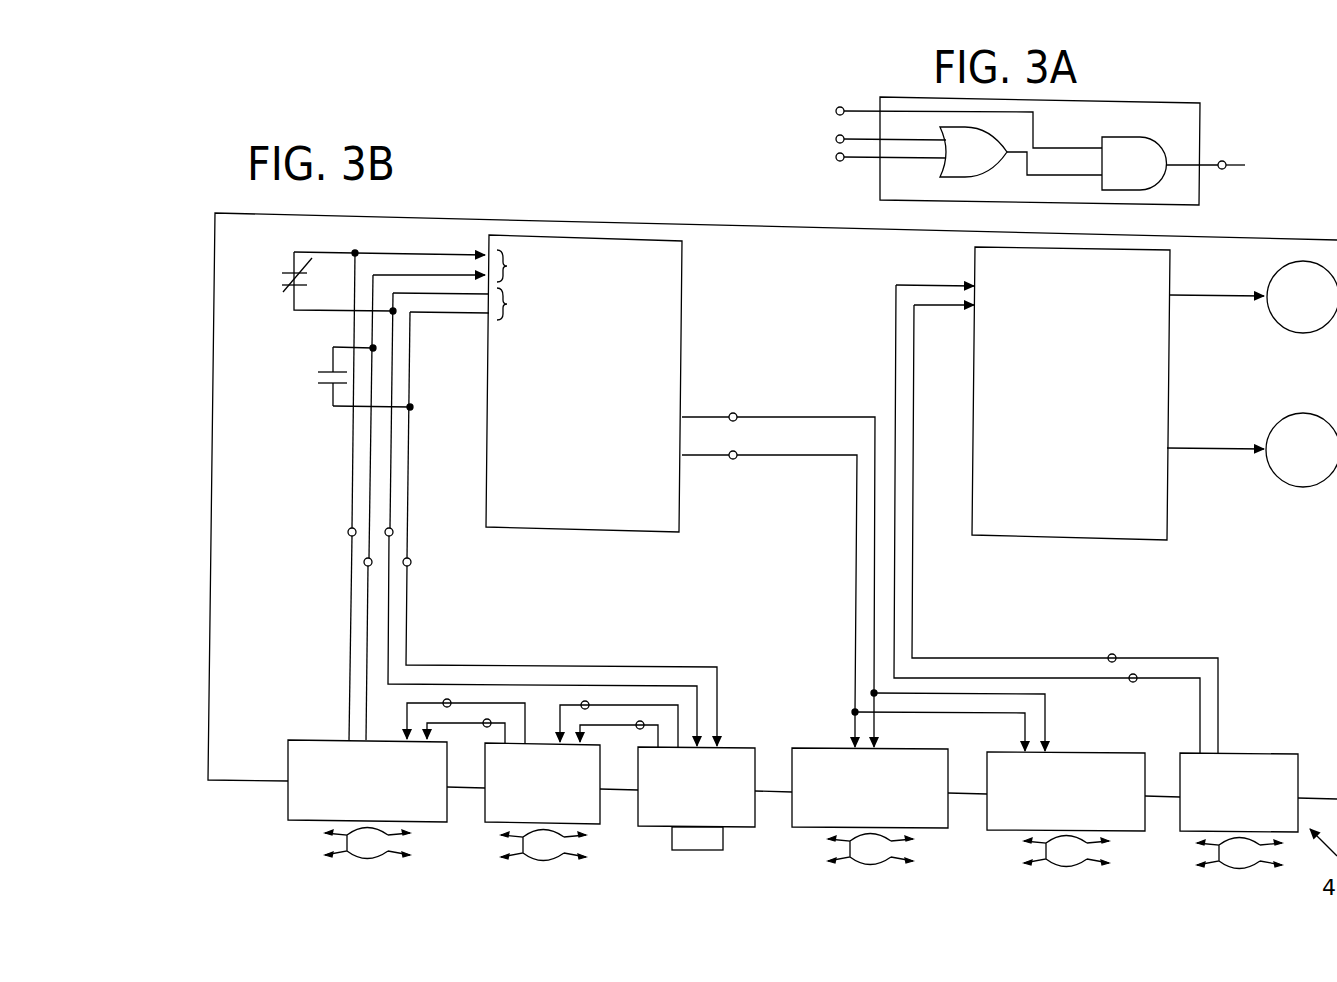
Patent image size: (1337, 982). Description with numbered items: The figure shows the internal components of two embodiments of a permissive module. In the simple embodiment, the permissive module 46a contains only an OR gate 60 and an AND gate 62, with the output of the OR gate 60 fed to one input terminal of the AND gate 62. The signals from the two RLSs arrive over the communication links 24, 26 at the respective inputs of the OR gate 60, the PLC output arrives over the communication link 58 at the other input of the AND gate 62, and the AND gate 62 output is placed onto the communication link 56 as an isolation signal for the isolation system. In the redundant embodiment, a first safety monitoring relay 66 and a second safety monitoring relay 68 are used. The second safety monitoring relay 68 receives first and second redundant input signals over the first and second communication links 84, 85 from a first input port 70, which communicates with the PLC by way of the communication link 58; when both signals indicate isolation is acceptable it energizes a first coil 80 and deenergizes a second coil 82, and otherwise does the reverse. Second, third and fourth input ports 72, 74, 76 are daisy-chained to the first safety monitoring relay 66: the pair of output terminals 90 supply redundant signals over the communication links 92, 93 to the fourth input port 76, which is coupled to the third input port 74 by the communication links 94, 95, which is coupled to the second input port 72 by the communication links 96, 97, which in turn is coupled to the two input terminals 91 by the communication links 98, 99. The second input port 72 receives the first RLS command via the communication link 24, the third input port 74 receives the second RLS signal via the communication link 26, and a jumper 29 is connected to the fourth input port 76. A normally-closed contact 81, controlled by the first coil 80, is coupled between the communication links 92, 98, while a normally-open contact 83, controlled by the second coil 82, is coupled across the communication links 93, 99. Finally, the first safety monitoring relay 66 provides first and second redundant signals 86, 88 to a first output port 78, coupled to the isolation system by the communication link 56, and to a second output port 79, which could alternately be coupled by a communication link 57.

In FIG. 3A, the communication link 24 is at (838, 137).
In FIG. 3B, the communication link 24 is at (318, 841).
In FIG. 3A, the communication link 26 is at (838, 160).
In FIG. 3B, the communication link 26 is at (498, 843).
In FIG. 3B, the jumper 29 is at (656, 845).
In FIG. 3A, the permissive module 46a is at (1188, 132).
In FIG. 3A, the communication link 56 is at (1224, 160).
In FIG. 3B, the communication link 56 is at (820, 848).
In FIG. 3B, the communication link 57 is at (1016, 849).
In FIG. 3A, the communication link 58 is at (838, 108).
In FIG. 3B, the communication link 58 is at (1190, 850).
In FIG. 3A, the OR gate 60 is at (981, 164).
In FIG. 3A, the AND gate 62 is at (1141, 172).
In FIG. 3B, the first safety monitoring relay 66 is at (533, 506).
In FIG. 3B, the second safety monitoring relay 68 is at (1016, 516).
In FIG. 3B, the first input port 70 is at (1248, 753).
In FIG. 3B, the second input port 72 is at (310, 740).
In FIG. 3B, the third input port 74 is at (603, 765).
In FIG. 3B, the fourth input port 76 is at (726, 746).
In FIG. 3B, the first output port 78 is at (822, 747).
In FIG. 3B, the second output port 79 is at (1076, 752).
In FIG. 3B, the first coil 80 is at (1313, 335).
In FIG. 3B, the normally-closed contact 81 is at (256, 303).
In FIG. 3B, the second coil 82 is at (1313, 489).
In FIG. 3B, the normally-open contact 83 is at (300, 402).
In FIG. 3B, the first communication link 84 is at (1109, 655).
In FIG. 3B, the second communication link 85 is at (1135, 675).
In FIG. 3B, the first redundant signal 86 is at (737, 413).
In FIG. 3B, the second redundant signal 88 is at (737, 459).
In FIG. 3B, the output terminals 90 is at (465, 304).
In FIG. 3B, the input terminals 91 is at (416, 267).
In FIG. 3B, the first communication link 92 is at (392, 529).
In FIG. 3B, the second communication link 93 is at (410, 566).
In FIG. 3B, the communication link 94 is at (640, 721).
In FIG. 3B, the communication link 95 is at (586, 701).
In FIG. 3B, the communication link 96 is at (489, 719).
In FIG. 3B, the communication link 97 is at (448, 699).
In FIG. 3B, the communication link 98 is at (349, 530).
In FIG. 3B, the communication link 99 is at (366, 566).